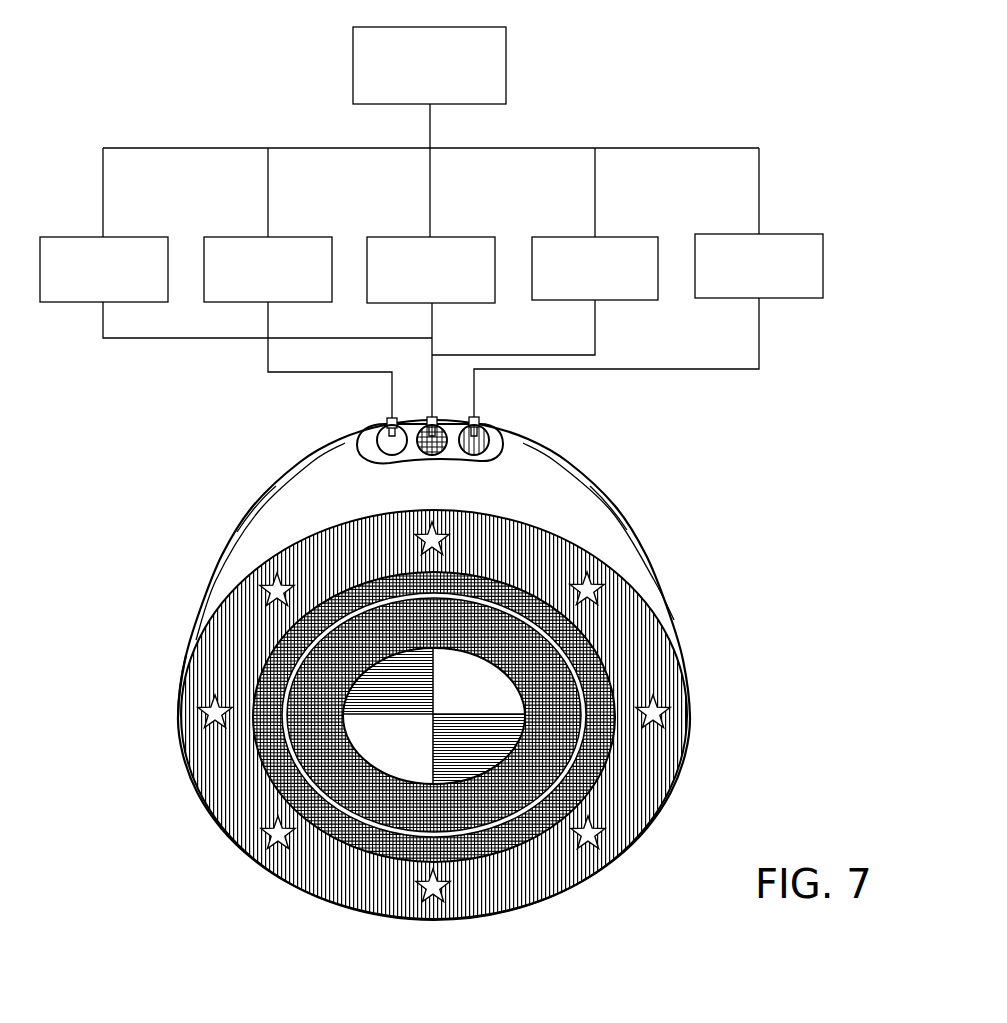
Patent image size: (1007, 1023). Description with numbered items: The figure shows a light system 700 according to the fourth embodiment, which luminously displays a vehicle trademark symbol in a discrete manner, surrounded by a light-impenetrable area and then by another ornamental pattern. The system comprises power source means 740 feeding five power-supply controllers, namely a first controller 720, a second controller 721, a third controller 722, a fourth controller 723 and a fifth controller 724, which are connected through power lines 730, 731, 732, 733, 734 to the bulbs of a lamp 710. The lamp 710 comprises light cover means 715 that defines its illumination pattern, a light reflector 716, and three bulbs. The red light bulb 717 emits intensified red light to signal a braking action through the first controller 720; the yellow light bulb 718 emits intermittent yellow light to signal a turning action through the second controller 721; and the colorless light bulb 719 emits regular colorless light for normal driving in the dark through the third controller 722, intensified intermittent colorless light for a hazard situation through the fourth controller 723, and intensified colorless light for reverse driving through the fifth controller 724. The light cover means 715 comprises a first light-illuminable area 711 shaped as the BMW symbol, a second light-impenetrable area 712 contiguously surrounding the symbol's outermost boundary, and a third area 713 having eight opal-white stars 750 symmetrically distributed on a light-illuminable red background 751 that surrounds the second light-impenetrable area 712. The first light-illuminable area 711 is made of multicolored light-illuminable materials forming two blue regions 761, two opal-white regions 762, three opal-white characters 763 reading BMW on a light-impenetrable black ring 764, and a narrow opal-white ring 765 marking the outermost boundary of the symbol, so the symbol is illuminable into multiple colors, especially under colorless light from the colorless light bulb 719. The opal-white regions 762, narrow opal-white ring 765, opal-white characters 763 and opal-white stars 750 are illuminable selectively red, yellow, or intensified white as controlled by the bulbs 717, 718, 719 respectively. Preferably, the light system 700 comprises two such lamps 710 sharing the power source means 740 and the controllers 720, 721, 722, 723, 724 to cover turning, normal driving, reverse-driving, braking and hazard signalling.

The light system 700 is at (712, 492).
The lamp 710 is at (157, 653).
The first light-illuminable area 711 is at (612, 668).
The second light-impenetrable area 712 is at (575, 805).
The third area 713 is at (543, 898).
The light cover means 715 is at (182, 727).
The light reflector 716 is at (598, 478).
The red light bulb 717 is at (479, 419).
The yellow light bulb 718 is at (429, 416).
The colorless light bulb 719 is at (387, 419).
The first controller 720 is at (792, 234).
The second controller 721 is at (627, 237).
The third controller 722 is at (464, 237).
The fourth controller 723 is at (302, 237).
The fifth controller 724 is at (137, 237).
The power line 730 is at (760, 326).
The power line 731 is at (596, 326).
The power line 732 is at (433, 326).
The power line 733 is at (270, 326).
The power line 734 is at (104, 326).
The power source means 740 is at (506, 70).
The opal-white stars 750 is at (590, 853).
The light-illuminable red background 751 is at (568, 870).
The blue regions 761 is at (585, 775).
The opal-white regions 762 is at (370, 732).
The opal-white characters 763 is at (588, 642).
The light-impenetrable black ring 764 is at (497, 733).
The narrow opal-white ring 765 is at (617, 689).